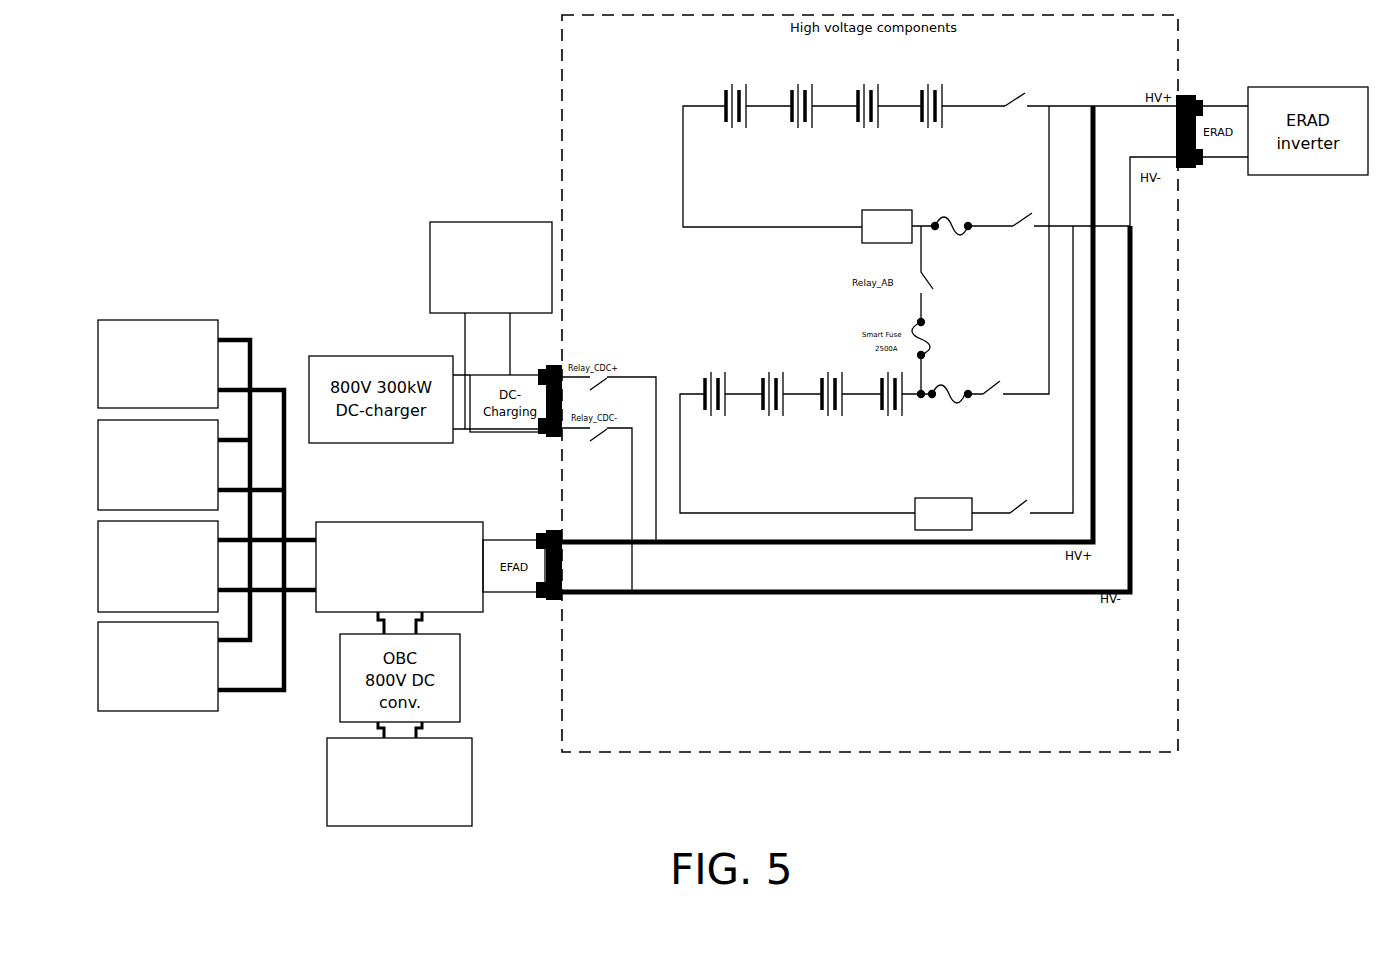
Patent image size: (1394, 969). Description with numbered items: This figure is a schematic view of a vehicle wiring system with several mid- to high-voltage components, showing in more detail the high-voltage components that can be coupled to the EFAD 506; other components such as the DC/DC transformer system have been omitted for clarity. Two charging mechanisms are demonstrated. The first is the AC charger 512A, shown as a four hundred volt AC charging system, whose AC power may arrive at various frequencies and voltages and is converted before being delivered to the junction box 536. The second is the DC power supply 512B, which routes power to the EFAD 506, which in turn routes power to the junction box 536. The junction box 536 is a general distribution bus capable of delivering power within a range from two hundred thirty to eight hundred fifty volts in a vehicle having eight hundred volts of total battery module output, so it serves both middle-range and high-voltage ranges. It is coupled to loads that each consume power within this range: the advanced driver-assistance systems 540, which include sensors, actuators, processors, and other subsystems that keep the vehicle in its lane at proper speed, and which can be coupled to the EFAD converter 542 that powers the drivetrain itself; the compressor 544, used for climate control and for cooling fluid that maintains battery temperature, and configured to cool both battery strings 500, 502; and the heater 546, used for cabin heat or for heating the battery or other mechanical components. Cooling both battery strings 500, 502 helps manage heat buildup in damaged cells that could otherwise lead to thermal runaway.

The battery string 500 is at (749, 348).
The battery string 502 is at (702, 85).
The EFAD 506 is at (544, 540).
The AC charger 512A is at (430, 236).
The DC power supply 512B is at (444, 827).
The junction box 536 is at (401, 522).
The advanced driver-assistance systems (ADAS) 540 is at (99, 392).
The EFAD converter 542 is at (99, 492).
The compressor 544 is at (99, 592).
The heater 546 is at (99, 692).